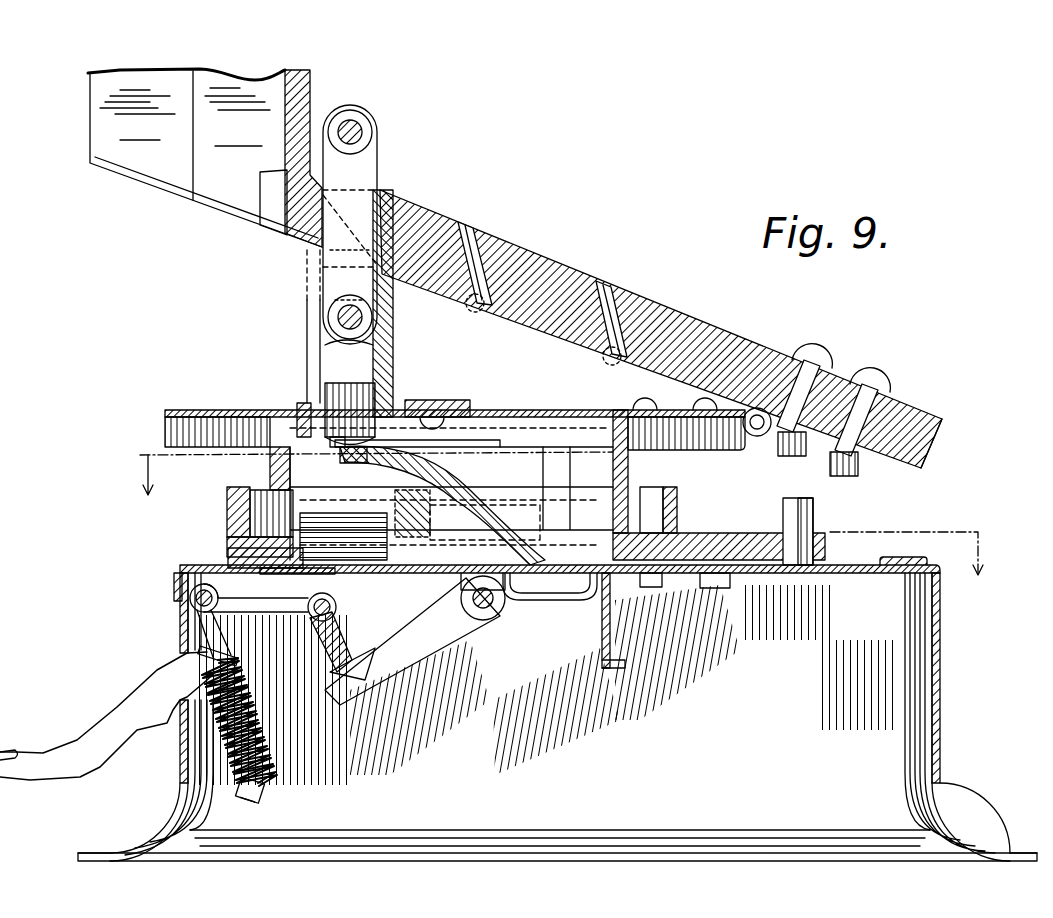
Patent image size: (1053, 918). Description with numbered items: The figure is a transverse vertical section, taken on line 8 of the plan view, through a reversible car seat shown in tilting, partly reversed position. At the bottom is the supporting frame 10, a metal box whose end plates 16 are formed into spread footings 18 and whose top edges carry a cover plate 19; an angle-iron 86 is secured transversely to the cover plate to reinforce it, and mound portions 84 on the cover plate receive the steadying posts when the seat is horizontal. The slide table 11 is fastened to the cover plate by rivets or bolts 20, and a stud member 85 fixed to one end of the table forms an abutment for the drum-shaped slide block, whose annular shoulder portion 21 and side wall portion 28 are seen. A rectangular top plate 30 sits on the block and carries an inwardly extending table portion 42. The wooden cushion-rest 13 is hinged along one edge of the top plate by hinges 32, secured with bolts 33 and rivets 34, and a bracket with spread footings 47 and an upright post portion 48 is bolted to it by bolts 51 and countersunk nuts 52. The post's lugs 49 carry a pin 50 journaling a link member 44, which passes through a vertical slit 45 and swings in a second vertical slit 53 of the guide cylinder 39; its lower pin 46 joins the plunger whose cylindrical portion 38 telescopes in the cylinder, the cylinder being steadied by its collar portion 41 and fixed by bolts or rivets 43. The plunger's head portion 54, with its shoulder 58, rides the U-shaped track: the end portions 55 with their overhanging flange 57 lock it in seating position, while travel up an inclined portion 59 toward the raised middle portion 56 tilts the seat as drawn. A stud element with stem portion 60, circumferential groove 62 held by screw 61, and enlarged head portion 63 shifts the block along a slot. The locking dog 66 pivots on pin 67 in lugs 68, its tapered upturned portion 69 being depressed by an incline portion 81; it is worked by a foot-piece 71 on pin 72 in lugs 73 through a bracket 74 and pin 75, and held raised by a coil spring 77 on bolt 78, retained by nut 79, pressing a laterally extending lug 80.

The section line 8 is at (565, 534).
The supporting frame 10 is at (956, 676).
The slide table 11 is at (830, 553).
The cushion-rest 13 is at (948, 455).
The end plates 16 is at (180, 613).
The spread footings 18 is at (106, 853).
The cover plate 19 is at (186, 578).
The rivets or bolts 20 is at (507, 600).
The annular shoulder portion 21 is at (242, 495).
The side wall portion 28 is at (628, 460).
The top plate 30 is at (502, 410).
The hinges 32 is at (762, 436).
The bolts 33 is at (835, 458).
The rivets 34 is at (652, 412).
The cylindrical portion 38 is at (393, 362).
The guide cylinder 39 is at (373, 322).
The collar portion 41 is at (374, 400).
The table portion 42 is at (520, 433).
The bolts or rivets 43 is at (439, 400).
The link member 44 is at (345, 232).
The vertical slit 45 is at (323, 345).
The pin 46 is at (323, 320).
The spread footings 47 is at (595, 287).
The upright post portion 48 is at (312, 96).
The lugs 49 is at (375, 118).
The pin 50 is at (362, 130).
The bolts 51 is at (518, 247).
The nuts 52 is at (468, 305).
The vertical slit 53 is at (307, 300).
The head portion 54 is at (299, 400).
The end portions 55 is at (581, 602).
The middle portion 56 is at (358, 468).
The overhanging flange 57 is at (577, 545).
The shoulder 58 is at (341, 447).
The inclined portion 59 is at (506, 492).
The stem portion 60 is at (679, 498).
The screw 61 is at (653, 588).
The circumferential groove 62 is at (679, 513).
The enlarged head portion 63 is at (698, 537).
The locking dog 66 is at (270, 602).
The pin 67 is at (176, 593).
The lugs 68 is at (240, 565).
The upturned portion 69 is at (352, 545).
The foot-piece 71 is at (119, 722).
The pin 72 is at (488, 620).
The lugs 73 is at (464, 620).
The bracket 74 is at (357, 642).
The pin 75 is at (313, 658).
The coil spring 77 is at (278, 772).
The bolt 78 is at (190, 640).
The nut 79 is at (247, 792).
The laterally extending lug 80 is at (236, 652).
The incline portion 81 is at (466, 492).
The mound portions 84 is at (910, 563).
The stud member 85 is at (815, 512).
The angle-iron 86 is at (615, 655).